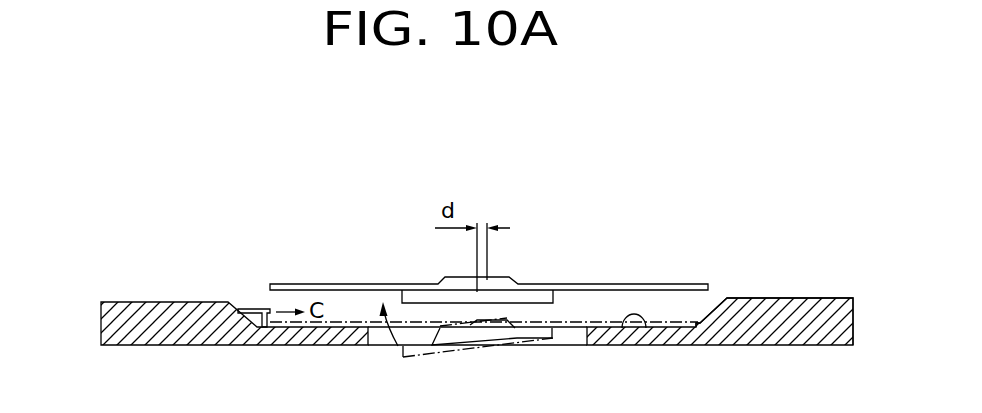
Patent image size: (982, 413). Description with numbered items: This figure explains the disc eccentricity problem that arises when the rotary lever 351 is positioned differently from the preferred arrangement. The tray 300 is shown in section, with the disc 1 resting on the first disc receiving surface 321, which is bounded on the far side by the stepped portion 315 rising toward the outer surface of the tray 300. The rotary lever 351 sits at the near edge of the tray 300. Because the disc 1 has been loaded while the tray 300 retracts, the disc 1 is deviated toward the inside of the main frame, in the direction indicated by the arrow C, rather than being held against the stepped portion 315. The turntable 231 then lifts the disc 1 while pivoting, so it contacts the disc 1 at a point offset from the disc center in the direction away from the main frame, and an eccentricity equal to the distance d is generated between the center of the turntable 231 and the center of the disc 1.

The tray 300 is at (90, 283).
The stepped portion 315 is at (715, 302).
The rotary lever 351 is at (247, 306).
The disc 1 is at (665, 283).
The turntable 231 is at (500, 285).
The first disc receiving surface 321 is at (623, 322).